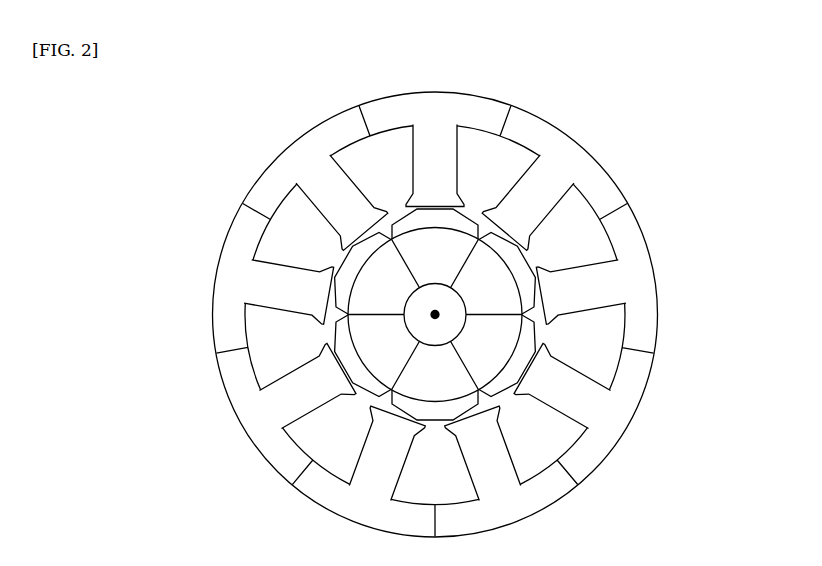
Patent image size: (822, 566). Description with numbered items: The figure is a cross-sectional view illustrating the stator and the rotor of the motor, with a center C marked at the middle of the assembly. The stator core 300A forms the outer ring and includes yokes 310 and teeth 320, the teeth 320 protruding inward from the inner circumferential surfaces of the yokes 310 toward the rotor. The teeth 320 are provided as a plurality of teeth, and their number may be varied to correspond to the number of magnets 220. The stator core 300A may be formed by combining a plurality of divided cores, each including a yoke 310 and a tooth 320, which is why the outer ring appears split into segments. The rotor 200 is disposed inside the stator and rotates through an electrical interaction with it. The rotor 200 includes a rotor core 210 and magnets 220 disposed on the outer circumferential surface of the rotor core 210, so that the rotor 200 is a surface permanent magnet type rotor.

The stator core 300A is at (134, 106).
The yokes 310 is at (388, 114).
The teeth 320 is at (440, 169).
The rotor 200 is at (737, 208).
The rotor core 210 is at (485, 278).
The magnets 220 is at (434, 223).
The center C is at (431, 312).